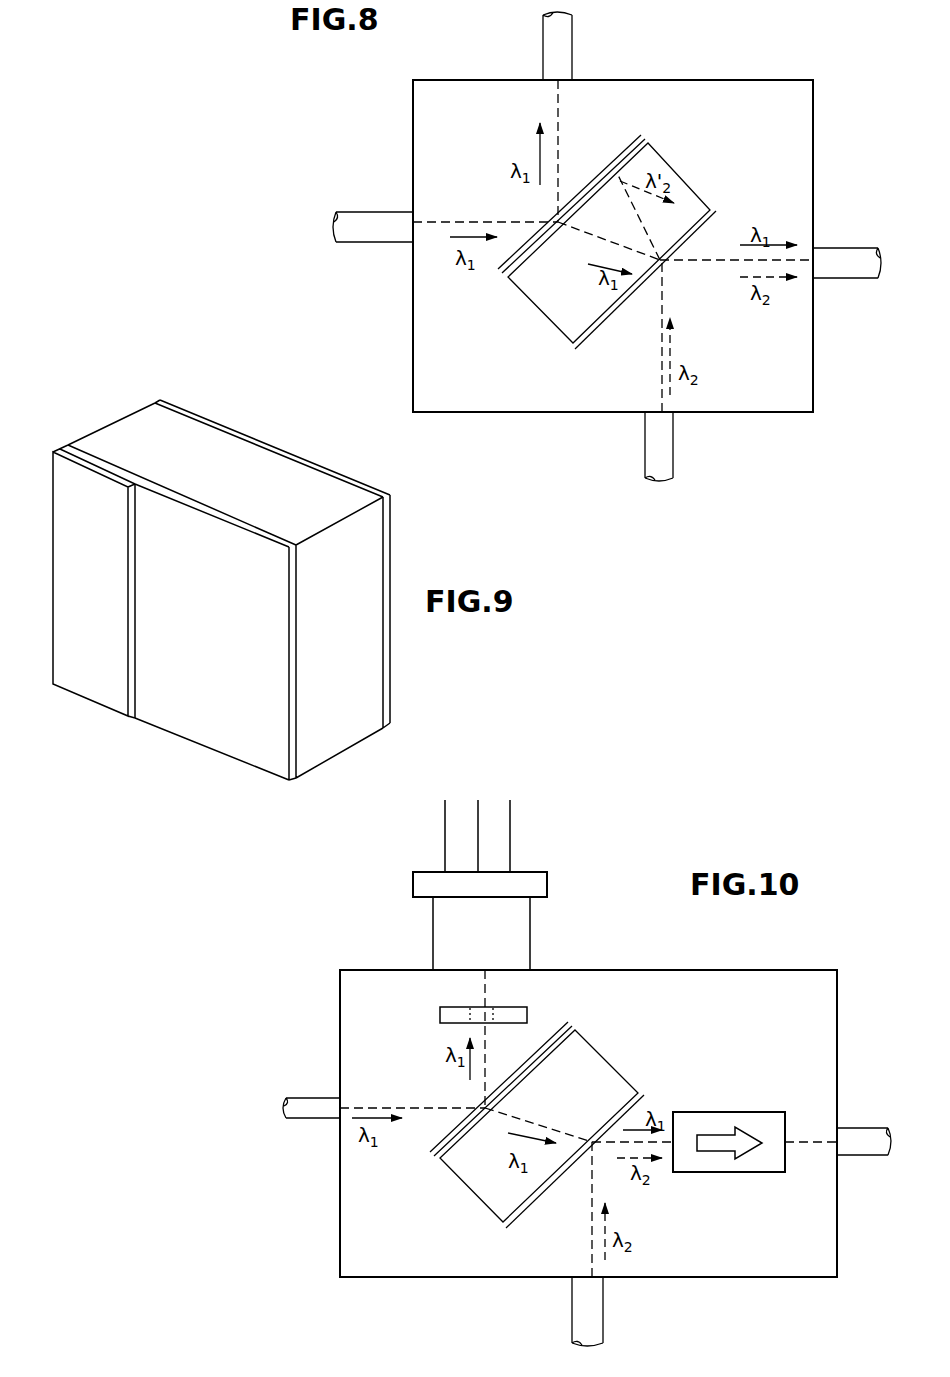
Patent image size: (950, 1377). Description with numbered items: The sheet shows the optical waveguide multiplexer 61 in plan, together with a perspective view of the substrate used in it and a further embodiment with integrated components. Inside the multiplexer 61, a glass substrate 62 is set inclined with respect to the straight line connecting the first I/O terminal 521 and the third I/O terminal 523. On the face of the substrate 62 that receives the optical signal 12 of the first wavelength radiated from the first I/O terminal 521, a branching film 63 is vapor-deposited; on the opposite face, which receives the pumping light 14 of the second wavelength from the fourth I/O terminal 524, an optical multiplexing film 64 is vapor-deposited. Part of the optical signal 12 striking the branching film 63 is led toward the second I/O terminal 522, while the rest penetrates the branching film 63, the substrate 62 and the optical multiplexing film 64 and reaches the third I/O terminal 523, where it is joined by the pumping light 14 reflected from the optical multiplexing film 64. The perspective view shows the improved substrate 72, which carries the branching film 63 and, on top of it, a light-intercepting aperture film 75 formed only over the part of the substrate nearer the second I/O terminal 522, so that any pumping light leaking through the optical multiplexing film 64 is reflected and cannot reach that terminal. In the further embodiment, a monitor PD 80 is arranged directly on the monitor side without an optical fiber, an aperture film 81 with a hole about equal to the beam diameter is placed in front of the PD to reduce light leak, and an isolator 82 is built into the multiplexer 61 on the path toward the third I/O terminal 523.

In FIG. 8, the optical signal 12 is at (443, 222).
In FIG. 10, the optical signal 12 is at (433, 1108).
In FIG. 8, the pumping light 14 is at (662, 285).
In FIG. 10, the pumping light 14 is at (594, 1183).
In FIG. 8, the optical waveguide multiplexer 61 is at (413, 359).
In FIG. 10, the optical waveguide multiplexer 61 is at (588, 1123).
In FIG. 10, the substrate 62 is at (597, 1047).
In FIG. 8, the branching film 63 is at (628, 148).
In FIG. 9, the branching film 63 is at (57, 450).
In FIG. 10, the branching film 63 is at (553, 1033).
In FIG. 8, the optical multiplexing film 64 is at (700, 227).
In FIG. 10, the optical multiplexing film 64 is at (640, 1097).
In FIG. 8, the substrate 72 is at (683, 190).
In FIG. 9, the substrate 72 is at (145, 428).
In FIG. 8, the aperture film 75 is at (620, 153).
In FIG. 9, the aperture film 75 is at (58, 483).
In FIG. 10, the monitor PD 80 is at (533, 880).
In FIG. 10, the aperture film 81 is at (437, 1007).
In FIG. 10, the isolator 82 is at (740, 1112).
In FIG. 8, the first I/O terminal 521 is at (390, 237).
In FIG. 10, the first I/O terminal 521 is at (328, 1080).
In FIG. 8, the second I/O terminal 522 is at (543, 37).
In FIG. 8, the third I/O terminal 523 is at (855, 267).
In FIG. 10, the third I/O terminal 523 is at (877, 1132).
In FIG. 8, the fourth I/O terminal 524 is at (660, 454).
In FIG. 10, the fourth I/O terminal 524 is at (598, 1318).